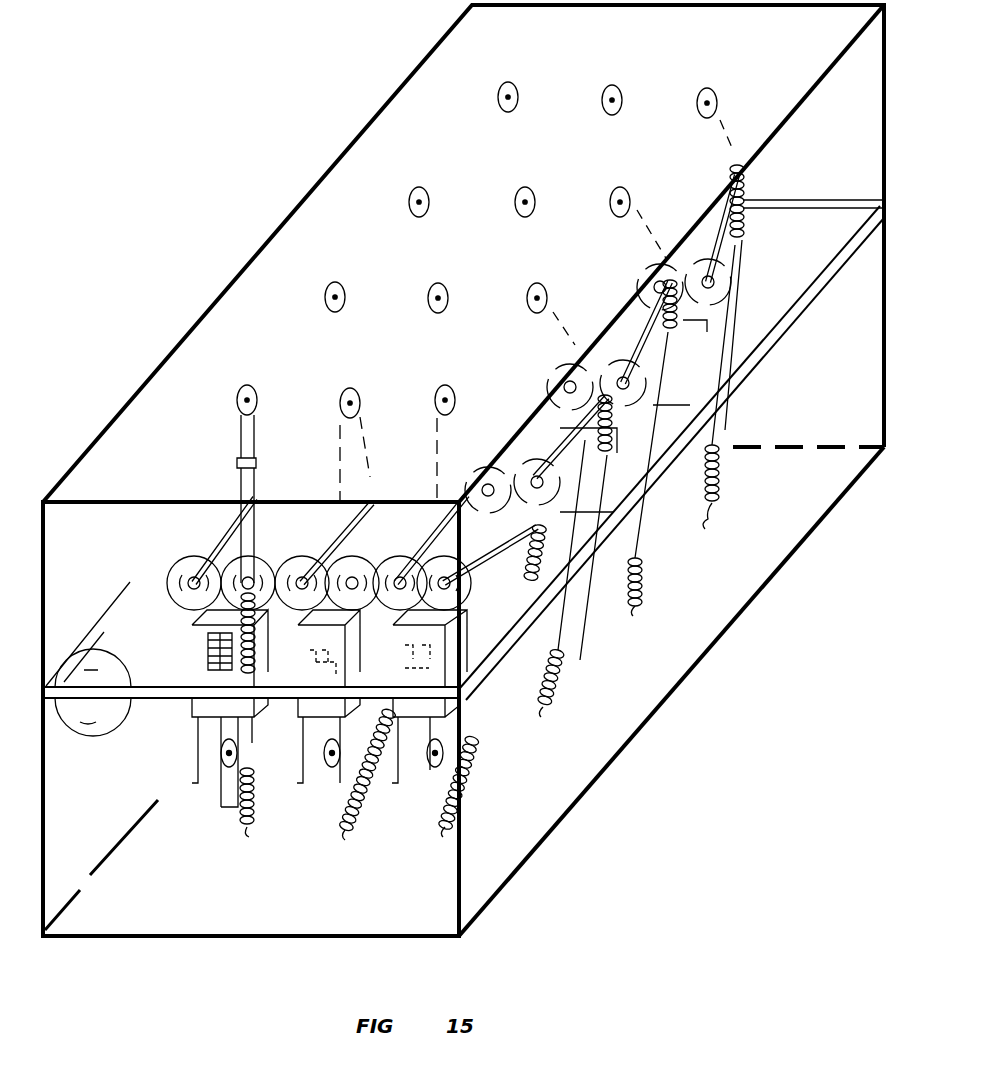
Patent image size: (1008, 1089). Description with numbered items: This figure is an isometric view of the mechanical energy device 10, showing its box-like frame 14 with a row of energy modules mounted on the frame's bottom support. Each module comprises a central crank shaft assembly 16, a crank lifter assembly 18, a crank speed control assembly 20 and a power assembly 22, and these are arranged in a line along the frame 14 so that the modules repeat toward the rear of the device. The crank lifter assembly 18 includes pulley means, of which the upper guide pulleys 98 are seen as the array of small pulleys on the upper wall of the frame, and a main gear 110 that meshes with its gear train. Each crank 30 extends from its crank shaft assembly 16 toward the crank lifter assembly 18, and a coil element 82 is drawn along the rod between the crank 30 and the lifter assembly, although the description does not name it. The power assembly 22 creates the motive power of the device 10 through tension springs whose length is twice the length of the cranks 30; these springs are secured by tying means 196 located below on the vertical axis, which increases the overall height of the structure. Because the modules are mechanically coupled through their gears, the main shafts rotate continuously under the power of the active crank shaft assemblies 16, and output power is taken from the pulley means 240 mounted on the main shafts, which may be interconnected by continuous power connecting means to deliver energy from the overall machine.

The mechanical energy device 10 is at (812, 316).
The frame 14 is at (852, 277).
The central crank shaft assembly 16 is at (255, 556).
The crank lifter assembly 18 is at (198, 556).
The crank speed control assembly 20 is at (192, 670).
The power assembly 22 is at (262, 795).
The crank 30 is at (340, 500).
The spring 82 is at (270, 602).
The upper guide pulley 98 is at (500, 92).
The main gear 110 is at (190, 606).
The tying means 196 is at (249, 835).
The pulley means 240 is at (97, 740).